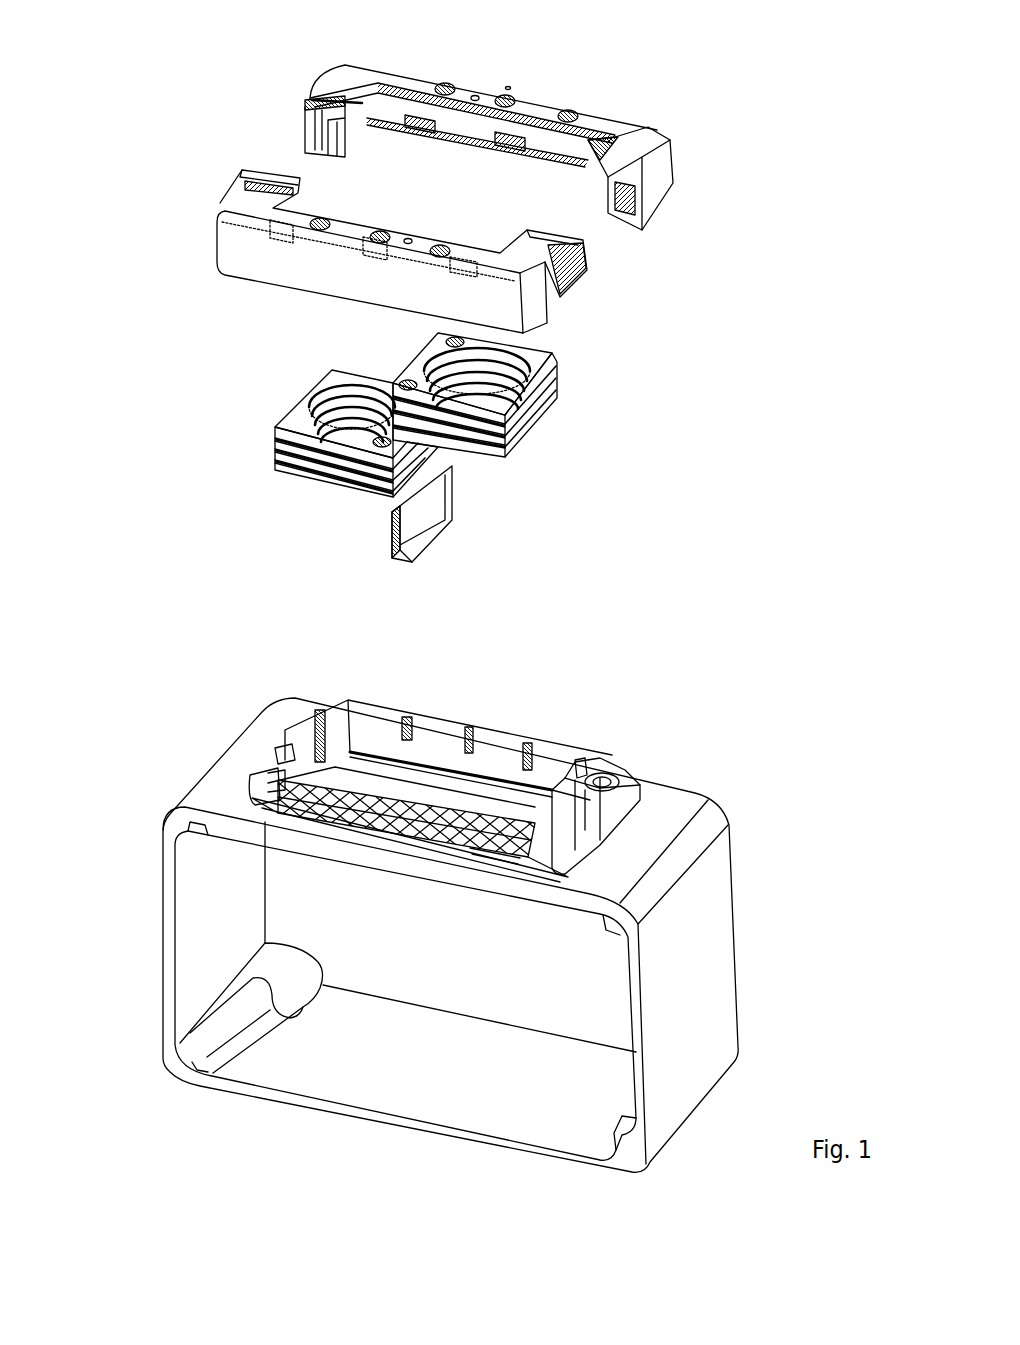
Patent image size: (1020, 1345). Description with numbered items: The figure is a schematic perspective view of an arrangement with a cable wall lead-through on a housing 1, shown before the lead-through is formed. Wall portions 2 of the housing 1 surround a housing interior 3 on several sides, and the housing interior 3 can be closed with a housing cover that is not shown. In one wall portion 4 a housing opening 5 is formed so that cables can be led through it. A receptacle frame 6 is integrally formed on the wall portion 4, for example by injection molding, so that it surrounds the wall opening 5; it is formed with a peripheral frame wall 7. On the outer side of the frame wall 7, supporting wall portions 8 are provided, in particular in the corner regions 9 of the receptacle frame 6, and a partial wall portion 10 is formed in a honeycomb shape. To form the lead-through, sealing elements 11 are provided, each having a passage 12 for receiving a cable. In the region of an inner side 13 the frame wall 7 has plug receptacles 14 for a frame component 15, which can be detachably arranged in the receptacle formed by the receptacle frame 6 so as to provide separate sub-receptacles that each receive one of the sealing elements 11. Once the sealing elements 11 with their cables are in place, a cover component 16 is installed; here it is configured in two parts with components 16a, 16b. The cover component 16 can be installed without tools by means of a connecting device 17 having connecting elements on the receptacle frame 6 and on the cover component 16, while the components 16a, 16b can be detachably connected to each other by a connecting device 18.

The housing 1 is at (697, 942).
The wall portions 2 is at (197, 928).
The housing interior 3 is at (333, 1047).
The wall portion 4 is at (280, 743).
The housing opening 5 is at (587, 763).
The receptacle frame 6 is at (447, 743).
The peripheral frame wall 7 is at (308, 757).
The supporting wall portions 8 is at (603, 777).
The corner regions 9 is at (600, 770).
The partial wall portion 10 is at (310, 785).
The sealing elements 11 is at (557, 392).
The passage 12 is at (487, 390).
The inner side 13 is at (385, 737).
The plug receptacles 14 is at (483, 797).
The frame component 15 is at (423, 530).
The cover component 16 is at (667, 175).
The component of the cover component 16a is at (540, 117).
The component of the cover component 16b is at (228, 248).
The connecting device 17 is at (493, 853).
The connecting device 18 is at (310, 130).